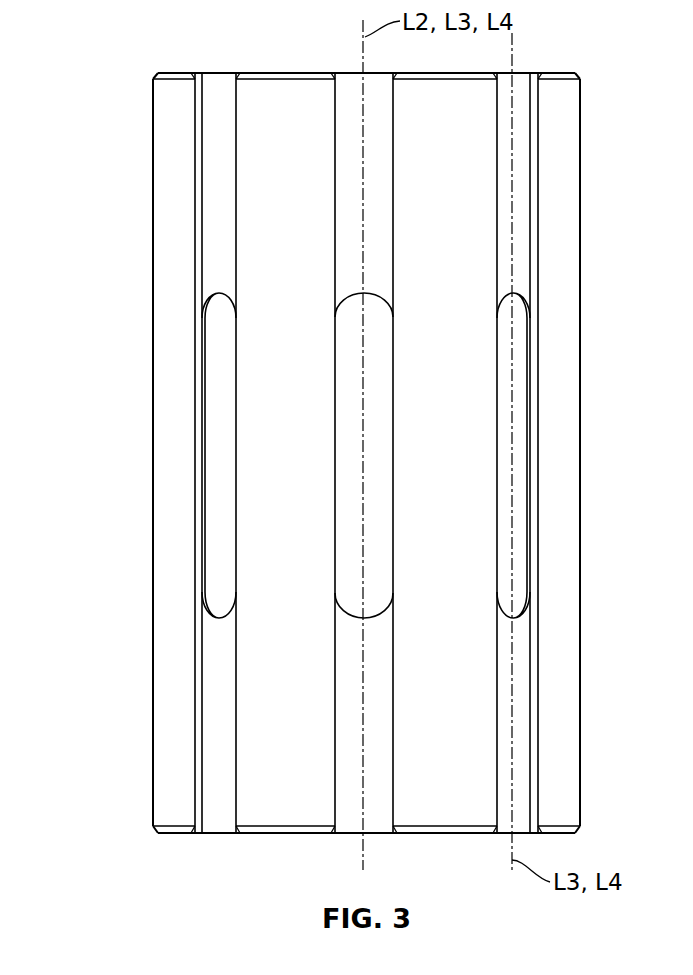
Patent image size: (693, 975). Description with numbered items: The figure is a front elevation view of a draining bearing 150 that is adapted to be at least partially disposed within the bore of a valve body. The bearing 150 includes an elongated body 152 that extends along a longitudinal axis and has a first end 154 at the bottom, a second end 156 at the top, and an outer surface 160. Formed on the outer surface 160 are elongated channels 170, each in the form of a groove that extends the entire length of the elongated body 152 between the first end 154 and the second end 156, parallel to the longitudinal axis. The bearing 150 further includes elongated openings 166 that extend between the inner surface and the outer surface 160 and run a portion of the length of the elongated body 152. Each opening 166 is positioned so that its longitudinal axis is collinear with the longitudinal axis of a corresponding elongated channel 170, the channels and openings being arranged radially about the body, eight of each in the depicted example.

The bearing 150 is at (153, 703).
The elongated body 152 is at (153, 466).
The first end 154 is at (152, 854).
The second end 156 is at (141, 96).
The outer surface 160 is at (183, 72).
The opening 166 is at (517, 466).
The elongated channel 170 is at (213, 88).